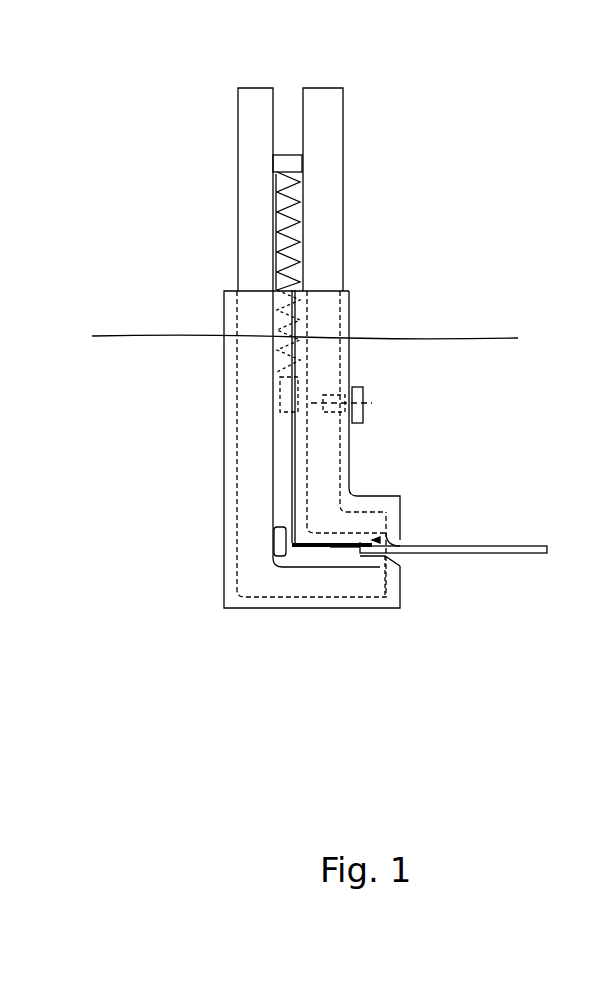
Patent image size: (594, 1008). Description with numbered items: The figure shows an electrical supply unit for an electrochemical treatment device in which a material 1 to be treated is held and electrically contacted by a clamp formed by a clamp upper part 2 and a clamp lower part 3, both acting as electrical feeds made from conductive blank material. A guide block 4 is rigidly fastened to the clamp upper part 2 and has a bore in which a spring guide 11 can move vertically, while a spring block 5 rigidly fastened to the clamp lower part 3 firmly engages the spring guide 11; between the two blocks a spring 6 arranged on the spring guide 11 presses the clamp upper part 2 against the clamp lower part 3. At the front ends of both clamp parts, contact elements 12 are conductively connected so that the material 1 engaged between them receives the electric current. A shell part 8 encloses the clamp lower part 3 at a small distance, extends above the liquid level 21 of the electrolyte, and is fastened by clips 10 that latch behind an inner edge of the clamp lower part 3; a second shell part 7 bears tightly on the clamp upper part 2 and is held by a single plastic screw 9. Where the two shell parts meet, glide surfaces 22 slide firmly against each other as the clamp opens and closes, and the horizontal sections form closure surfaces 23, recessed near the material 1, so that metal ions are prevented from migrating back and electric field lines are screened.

The material to be treated 1 is at (495, 547).
The clamp upper part 2 is at (325, 252).
The clamp lower part 3 is at (257, 255).
The guide block 4 is at (305, 375).
The spring block 5 is at (282, 162).
The spring 6 is at (307, 202).
The shell part 7 is at (367, 496).
The shell part 8 is at (233, 575).
The plastic screw 9 is at (363, 392).
The clips 10 is at (280, 538).
The spring guide 11 is at (278, 217).
The contact elements 12 is at (380, 540).
The liquid level 21 is at (467, 335).
The glide surfaces 22 is at (288, 475).
The closure surfaces 23 is at (328, 545).